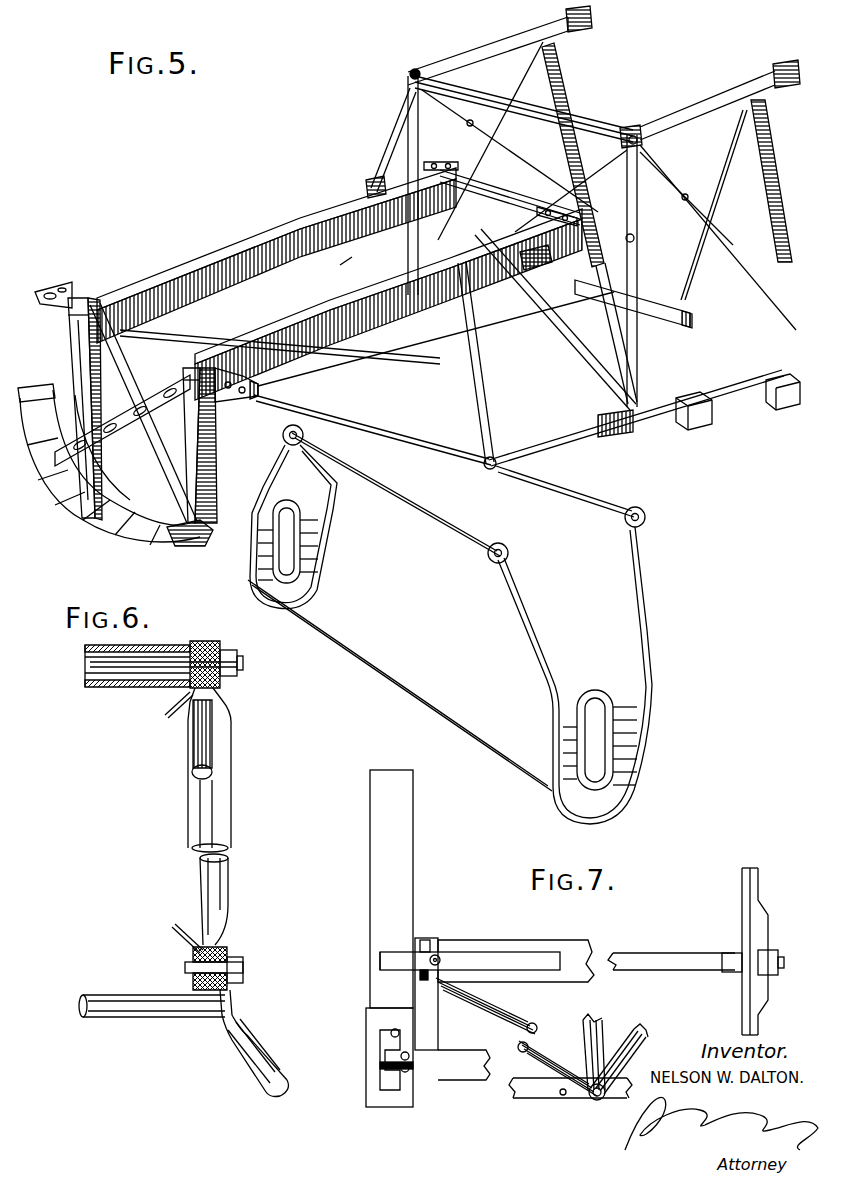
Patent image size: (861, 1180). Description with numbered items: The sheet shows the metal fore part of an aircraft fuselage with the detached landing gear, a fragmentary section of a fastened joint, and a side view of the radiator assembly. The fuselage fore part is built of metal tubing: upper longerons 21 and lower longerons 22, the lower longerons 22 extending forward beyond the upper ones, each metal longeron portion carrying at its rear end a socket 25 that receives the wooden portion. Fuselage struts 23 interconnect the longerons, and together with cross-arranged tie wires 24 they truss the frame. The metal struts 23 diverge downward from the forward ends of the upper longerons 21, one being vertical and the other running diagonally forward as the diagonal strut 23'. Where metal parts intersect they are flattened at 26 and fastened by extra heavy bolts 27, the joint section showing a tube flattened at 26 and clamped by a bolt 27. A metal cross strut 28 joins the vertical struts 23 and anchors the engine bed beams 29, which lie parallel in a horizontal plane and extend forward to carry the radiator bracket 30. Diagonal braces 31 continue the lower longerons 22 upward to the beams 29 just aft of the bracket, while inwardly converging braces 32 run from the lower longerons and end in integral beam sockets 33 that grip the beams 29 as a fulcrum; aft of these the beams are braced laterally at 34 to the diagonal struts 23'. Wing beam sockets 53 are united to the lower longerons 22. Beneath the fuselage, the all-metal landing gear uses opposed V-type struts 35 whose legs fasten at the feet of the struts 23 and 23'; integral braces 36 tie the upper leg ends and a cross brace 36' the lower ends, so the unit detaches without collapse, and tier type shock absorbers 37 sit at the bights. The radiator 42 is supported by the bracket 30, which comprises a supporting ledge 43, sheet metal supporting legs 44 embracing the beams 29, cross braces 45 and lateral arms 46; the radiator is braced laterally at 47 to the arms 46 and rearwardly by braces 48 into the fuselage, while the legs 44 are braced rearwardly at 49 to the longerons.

In FIG. 5, the upper longeron 21 is at (473, 55).
In FIG. 5, the lower longeron 22 is at (720, 398).
In FIG. 5, the fuselage strut 23 is at (603, 188).
In FIG. 6, the fuselage strut 23 is at (183, 795).
In FIG. 7, the fuselage strut 23 is at (725, 951).
In FIG. 5, the diagonal strut 23' is at (556, 226).
In FIG. 6, the diagonal strut 23' is at (236, 748).
In FIG. 7, the diagonal strut 23' is at (637, 1052).
In FIG. 5, the tie wire 24 is at (700, 258).
In FIG. 5, the socket 25 is at (592, 22).
In FIG. 5, the flattened portion 26 is at (636, 128).
In FIG. 6, the flattened portion 26 is at (218, 692).
In FIG. 7, the flattened portion 26 is at (582, 1100).
In FIG. 5, the bolt 27 is at (646, 145).
In FIG. 6, the bolt 27 is at (243, 663).
In FIG. 7, the bolt 27 is at (597, 1104).
In FIG. 5, the cross strut 28 is at (520, 193).
In FIG. 5, the engine bed beam 29 is at (215, 258).
In FIG. 5, the radiator bracket 30 is at (128, 290).
In FIG. 5, the diagonal brace 31 is at (168, 276).
In FIG. 7, the diagonal brace 31 is at (531, 1015).
In FIG. 5, the converging brace 32 is at (268, 241).
In FIG. 7, the converging brace 32 is at (610, 1027).
In FIG. 5, the beam socket 33 is at (363, 253).
In FIG. 5, the lateral bracing 34 is at (375, 182).
In FIG. 5, the V-type strut 35 is at (323, 542).
In FIG. 6, the V-type strut 35 is at (244, 1030).
In FIG. 5, the brace 36 is at (463, 513).
In FIG. 6, the brace 36 is at (152, 990).
In FIG. 5, the cross brace 36' is at (400, 685).
In FIG. 5, the shock absorber 37 is at (636, 733).
In FIG. 7, the radiator 42 is at (414, 812).
In FIG. 5, the supporting ledge 43 is at (42, 385).
In FIG. 7, the supporting ledge 43 is at (374, 1073).
In FIG. 5, the supporting leg 44 is at (217, 448).
In FIG. 7, the supporting leg 44 is at (438, 1035).
In FIG. 5, the cross brace 45 is at (123, 367).
In FIG. 5, the arm 46 is at (70, 288).
In FIG. 7, the arm 46 is at (434, 946).
In FIG. 7, the lateral brace 47 is at (385, 957).
In FIG. 7, the rearwardly extending brace 48 is at (610, 958).
In FIG. 7, the rearward brace 49 is at (469, 1082).
In FIG. 5, the wing beam socket 53 is at (698, 430).